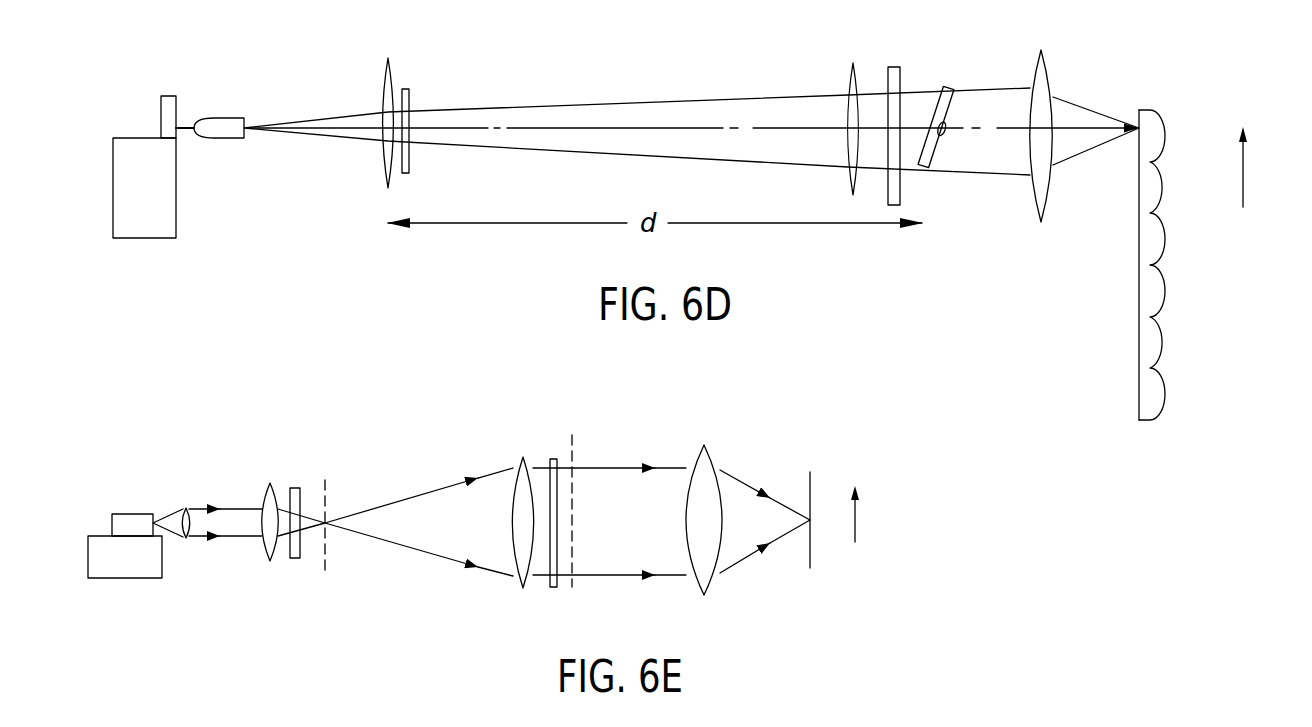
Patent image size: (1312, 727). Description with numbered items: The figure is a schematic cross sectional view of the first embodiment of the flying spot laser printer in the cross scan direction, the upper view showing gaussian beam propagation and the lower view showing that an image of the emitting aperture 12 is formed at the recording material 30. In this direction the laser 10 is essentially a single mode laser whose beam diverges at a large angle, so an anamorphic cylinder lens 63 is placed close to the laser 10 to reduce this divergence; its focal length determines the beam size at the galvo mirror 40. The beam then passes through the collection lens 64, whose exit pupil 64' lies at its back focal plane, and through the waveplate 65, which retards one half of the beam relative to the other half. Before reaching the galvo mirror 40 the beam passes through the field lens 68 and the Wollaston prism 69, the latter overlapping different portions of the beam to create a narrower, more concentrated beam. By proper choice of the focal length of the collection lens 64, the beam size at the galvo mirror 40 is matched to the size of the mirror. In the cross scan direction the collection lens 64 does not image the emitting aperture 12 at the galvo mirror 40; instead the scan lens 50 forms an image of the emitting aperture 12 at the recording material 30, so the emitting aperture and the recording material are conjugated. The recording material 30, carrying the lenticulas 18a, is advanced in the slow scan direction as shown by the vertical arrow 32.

In FIG. 6D, the laser 10 is at (161, 108).
In FIG. 6E, the laser 10 is at (118, 514).
In FIG. 6E, the emitting aperture 12 is at (156, 520).
In FIG. 6D, the cylinder lens 63 is at (224, 118).
In FIG. 6E, the cylinder lens 63 is at (185, 506).
In FIG. 6D, the collection lens 64 is at (358, 117).
In FIG. 6E, the collection lens 64 is at (245, 539).
In FIG. 6E, the exit pupil 64' is at (335, 523).
In FIG. 6D, the waveplate 65 is at (410, 96).
In FIG. 6E, the waveplate 65 is at (293, 488).
In FIG. 6D, the field lens 68 is at (848, 78).
In FIG. 6E, the field lens 68 is at (517, 462).
In FIG. 6D, the Wollaston prism 69 is at (901, 72).
In FIG. 6E, the Wollaston prism 69 is at (552, 456).
In FIG. 6D, the galvo mirror 40 is at (953, 80).
In FIG. 6E, the galvo mirror 40 is at (577, 442).
In FIG. 6D, the scan lens 50 is at (1053, 82).
In FIG. 6E, the scan lens 50 is at (710, 453).
In FIG. 6D, the recording material 30 is at (1158, 117).
In FIG. 6E, the recording material 30 is at (813, 478).
In FIG. 6D, the lenticulas 18a is at (1156, 290).
In FIG. 6D, the vertical arrow 32 is at (1245, 178).
In FIG. 6E, the vertical arrow 32 is at (858, 515).